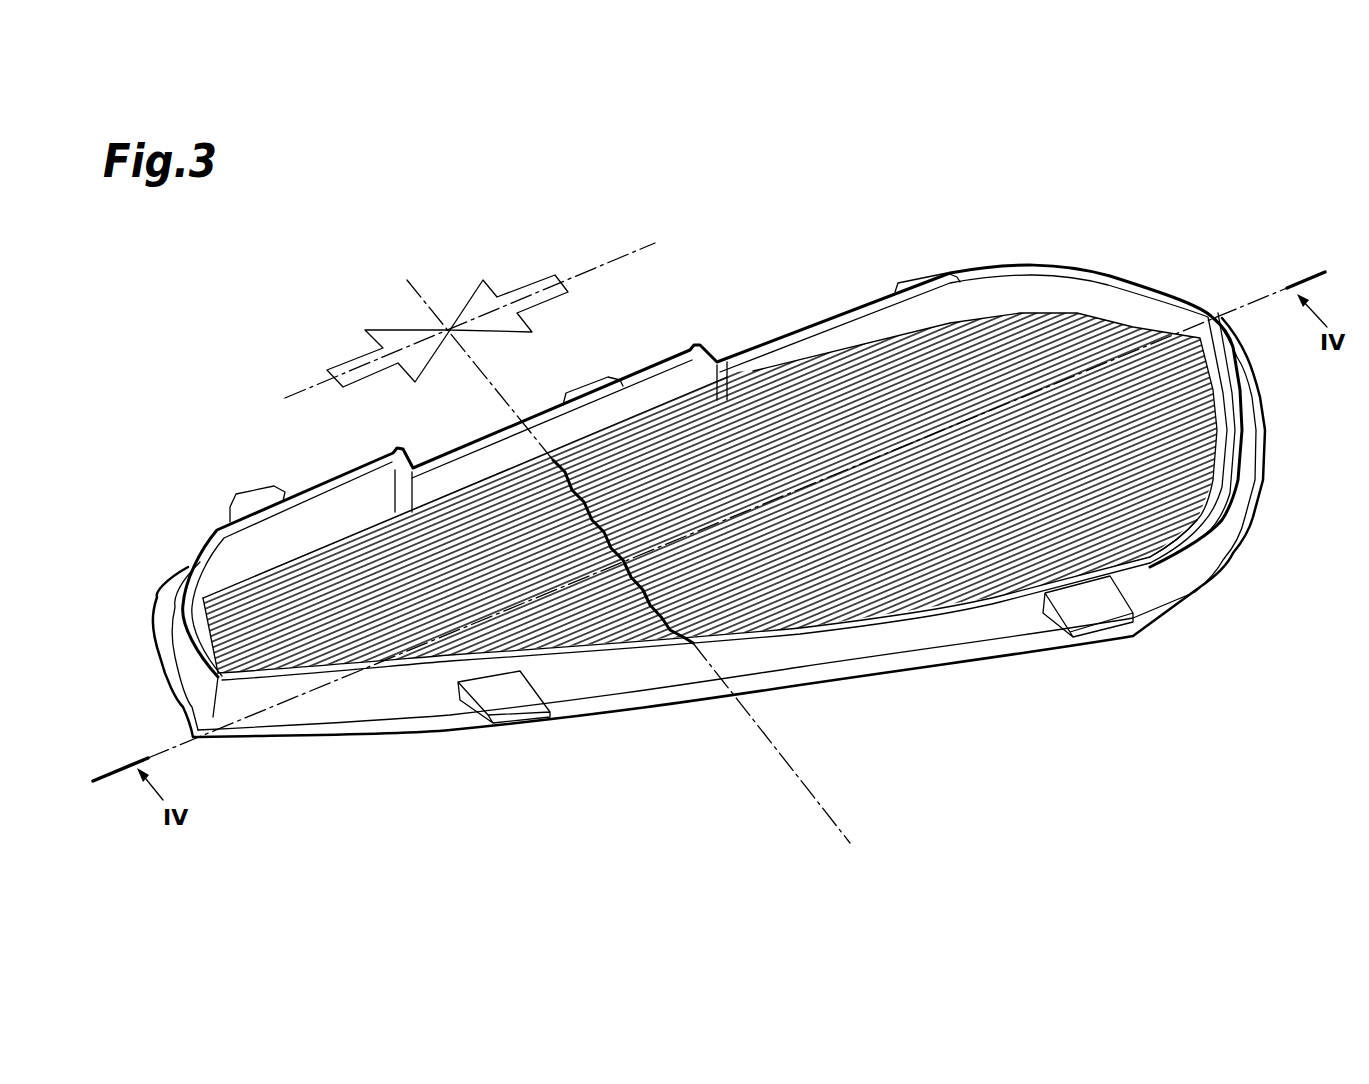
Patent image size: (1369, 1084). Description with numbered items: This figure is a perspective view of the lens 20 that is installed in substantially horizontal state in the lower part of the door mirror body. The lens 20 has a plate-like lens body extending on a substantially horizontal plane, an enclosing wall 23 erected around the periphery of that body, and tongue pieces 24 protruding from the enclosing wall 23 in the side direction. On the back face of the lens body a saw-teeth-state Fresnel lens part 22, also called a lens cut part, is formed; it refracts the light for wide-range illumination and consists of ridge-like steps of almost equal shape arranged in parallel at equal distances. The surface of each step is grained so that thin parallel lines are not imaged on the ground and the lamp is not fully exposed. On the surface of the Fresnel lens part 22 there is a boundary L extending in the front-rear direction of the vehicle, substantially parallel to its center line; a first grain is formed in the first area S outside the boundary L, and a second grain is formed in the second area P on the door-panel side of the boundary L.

The lens 20 is at (1084, 228).
The Fresnel lens part 22 is at (845, 593).
The enclosing wall 23 is at (1218, 533).
The tongue pieces 24 is at (257, 494).
The first area S is at (363, 535).
The second area P is at (863, 377).
The boundary L is at (588, 510).